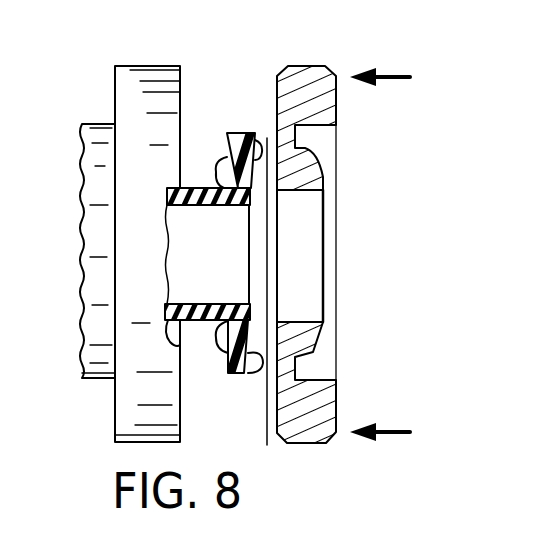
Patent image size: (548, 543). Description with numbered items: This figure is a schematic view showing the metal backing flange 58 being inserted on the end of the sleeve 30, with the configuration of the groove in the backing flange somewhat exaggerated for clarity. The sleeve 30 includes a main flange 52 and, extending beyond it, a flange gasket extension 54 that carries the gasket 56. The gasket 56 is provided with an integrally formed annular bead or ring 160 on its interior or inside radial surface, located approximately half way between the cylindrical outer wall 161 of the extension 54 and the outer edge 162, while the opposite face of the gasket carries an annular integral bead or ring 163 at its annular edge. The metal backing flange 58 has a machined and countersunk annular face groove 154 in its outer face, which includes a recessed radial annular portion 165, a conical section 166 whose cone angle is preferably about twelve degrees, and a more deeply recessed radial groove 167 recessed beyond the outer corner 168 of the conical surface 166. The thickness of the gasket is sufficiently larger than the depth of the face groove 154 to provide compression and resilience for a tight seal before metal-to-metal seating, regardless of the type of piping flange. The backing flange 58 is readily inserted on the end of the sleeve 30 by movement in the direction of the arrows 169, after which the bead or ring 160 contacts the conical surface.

The sleeve 30 is at (66, 212).
The main flange 52 is at (137, 65).
The flange gasket extension 54 is at (243, 251).
The gasket 56 is at (240, 132).
The metal backing flange 58 is at (298, 444).
The annular face groove 154 is at (348, 137).
The annular bead or ring 160 is at (215, 343).
The cylindrical outer wall 161 is at (207, 322).
The outer edge 162 is at (250, 372).
The annular integral bead or ring 163 is at (263, 138).
The recessed radial annular portion 165 is at (314, 340).
The conical section 166 is at (313, 347).
The recessed radial groove 167 is at (300, 368).
The outer corner 168 is at (334, 150).
The arrows 169 is at (388, 76).